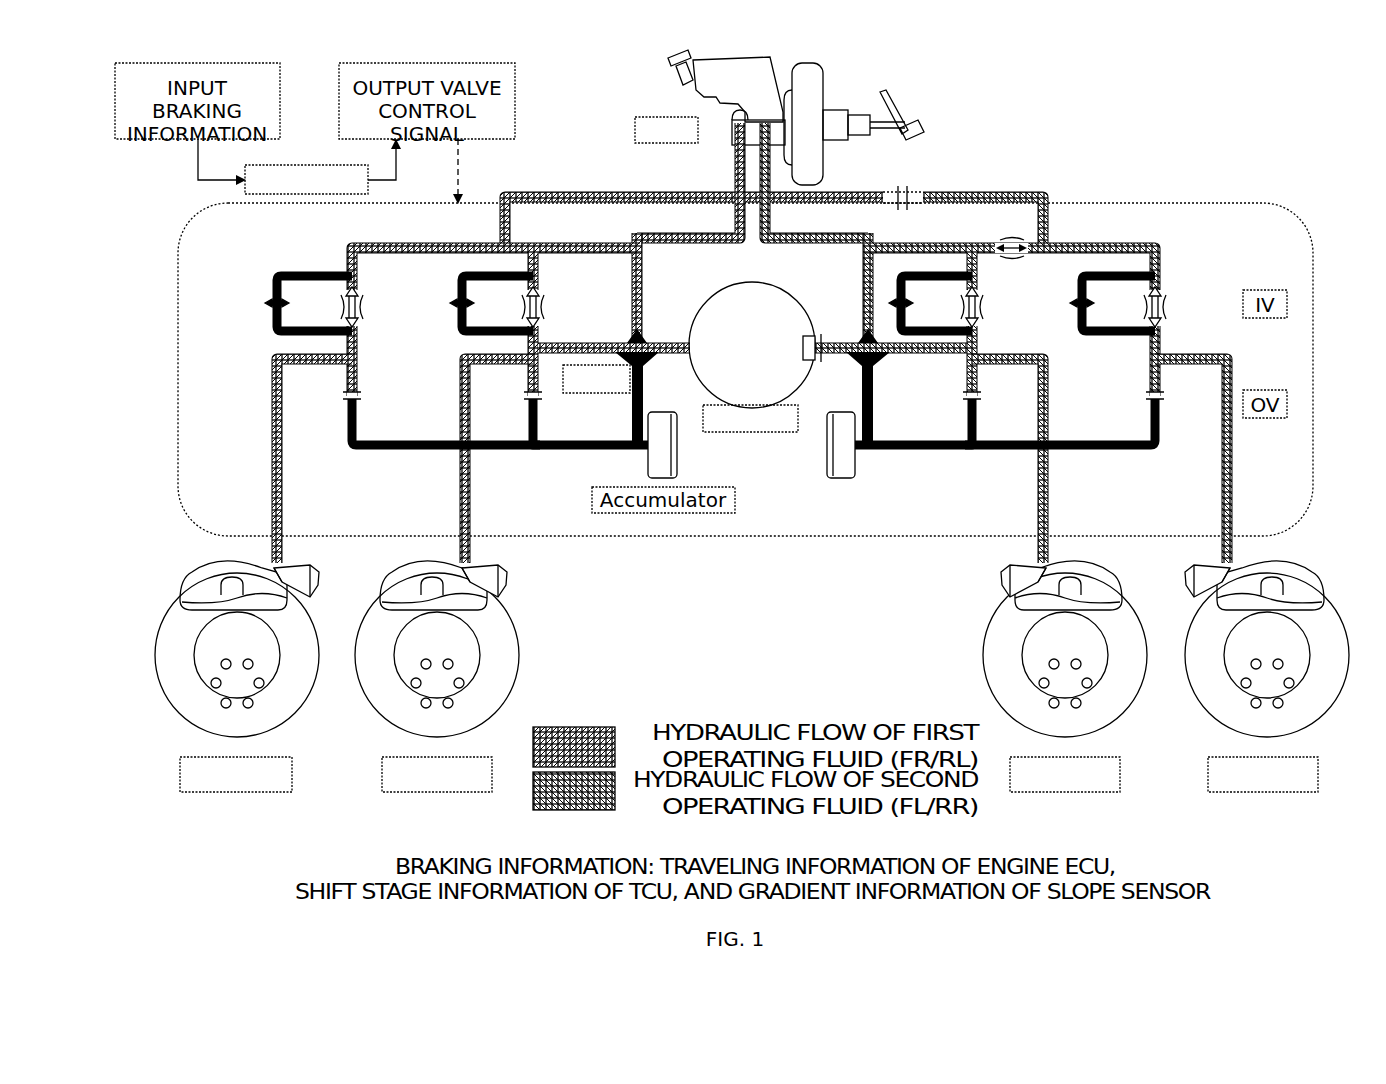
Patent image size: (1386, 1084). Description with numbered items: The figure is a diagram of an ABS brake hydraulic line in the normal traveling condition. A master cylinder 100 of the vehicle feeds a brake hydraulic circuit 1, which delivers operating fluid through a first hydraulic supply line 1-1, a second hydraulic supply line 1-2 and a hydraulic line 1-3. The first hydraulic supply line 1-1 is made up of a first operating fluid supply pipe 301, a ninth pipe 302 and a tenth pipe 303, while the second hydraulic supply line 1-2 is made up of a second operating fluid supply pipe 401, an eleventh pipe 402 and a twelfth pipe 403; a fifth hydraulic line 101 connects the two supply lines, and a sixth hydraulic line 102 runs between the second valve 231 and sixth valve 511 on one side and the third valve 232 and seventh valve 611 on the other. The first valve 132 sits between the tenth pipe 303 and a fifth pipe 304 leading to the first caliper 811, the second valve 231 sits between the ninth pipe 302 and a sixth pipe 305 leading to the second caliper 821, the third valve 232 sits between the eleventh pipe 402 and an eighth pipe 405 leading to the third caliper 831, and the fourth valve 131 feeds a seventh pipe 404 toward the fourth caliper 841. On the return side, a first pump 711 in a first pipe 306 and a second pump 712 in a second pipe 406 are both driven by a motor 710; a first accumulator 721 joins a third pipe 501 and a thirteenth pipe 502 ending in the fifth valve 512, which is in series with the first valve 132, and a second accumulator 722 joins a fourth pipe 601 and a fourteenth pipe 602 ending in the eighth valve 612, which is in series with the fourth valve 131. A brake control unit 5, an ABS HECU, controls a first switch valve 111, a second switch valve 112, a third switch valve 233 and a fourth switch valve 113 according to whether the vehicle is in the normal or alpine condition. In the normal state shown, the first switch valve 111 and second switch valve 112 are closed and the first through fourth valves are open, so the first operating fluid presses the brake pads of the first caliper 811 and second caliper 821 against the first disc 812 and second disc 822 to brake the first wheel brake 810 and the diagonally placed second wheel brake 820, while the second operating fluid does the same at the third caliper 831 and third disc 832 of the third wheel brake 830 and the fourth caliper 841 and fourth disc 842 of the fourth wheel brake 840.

The brake hydraulic circuit 1 is at (798, 316).
The first hydraulic supply line 1-1 is at (562, 259).
The second hydraulic supply line 1-2 is at (998, 259).
The hydraulic line 1-3 is at (752, 461).
The brake control unit 5 is at (370, 185).
The master cylinder 100 is at (688, 85).
The fifth hydraulic line 101 is at (1048, 205).
The sixth hydraulic line 102 is at (668, 343).
The first switch valve 111 is at (905, 188).
The second switch valve 112 is at (818, 335).
The fourth switch valve 113 is at (749, 438).
The fourth valve 131 is at (1166, 307).
The first valve 132 is at (360, 307).
The second valve 231 is at (545, 307).
The third valve 232 is at (985, 307).
The third switch valve 233 is at (1012, 240).
The first operating fluid supply pipe 301 is at (695, 234).
The ninth pipe 302 is at (591, 243).
The tenth pipe 303 is at (347, 243).
The fifth pipe 304 is at (282, 510).
The sixth pipe 305 is at (458, 491).
The first pipe 306 is at (632, 269).
The second operating fluid supply pipe 401 is at (835, 234).
The eleventh pipe 402 is at (947, 243).
The twelfth pipe 403 is at (1112, 243).
The seventh pipe 404 is at (1222, 498).
The eighth pipe 405 is at (1048, 515).
The second pipe 406 is at (862, 262).
The third pipe 501 is at (553, 455).
The thirteenth pipe 502 is at (495, 455).
The sixth valve 511 is at (525, 395).
The fifth valve 512 is at (360, 397).
The fourth pipe 601 is at (920, 455).
The fourteenth pipe 602 is at (1005, 455).
The seventh valve 611 is at (964, 397).
The eighth valve 612 is at (1147, 397).
The motor 710 is at (748, 405).
The first pump 711 is at (641, 343).
The second pump 712 is at (886, 364).
The first accumulator 721 is at (679, 452).
The second accumulator 722 is at (827, 462).
The first wheel brake 810 is at (242, 718).
The first caliper 811 is at (193, 598).
The first disc 812 is at (283, 690).
The second wheel brake 820 is at (511, 676).
The second caliper 821 is at (492, 593).
The second disc 822 is at (497, 655).
The third wheel brake 830 is at (988, 676).
The third caliper 831 is at (1010, 593).
The third disc 832 is at (1005, 655).
The fourth wheel brake 840 is at (1258, 718).
The fourth caliper 841 is at (1220, 598).
The fourth disc 842 is at (1330, 665).